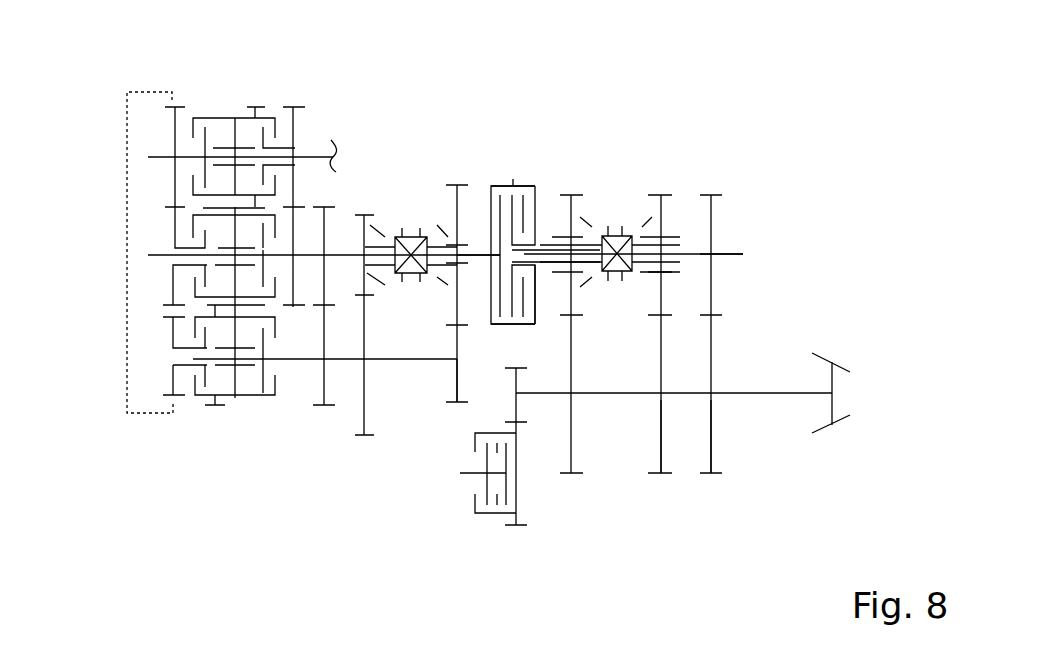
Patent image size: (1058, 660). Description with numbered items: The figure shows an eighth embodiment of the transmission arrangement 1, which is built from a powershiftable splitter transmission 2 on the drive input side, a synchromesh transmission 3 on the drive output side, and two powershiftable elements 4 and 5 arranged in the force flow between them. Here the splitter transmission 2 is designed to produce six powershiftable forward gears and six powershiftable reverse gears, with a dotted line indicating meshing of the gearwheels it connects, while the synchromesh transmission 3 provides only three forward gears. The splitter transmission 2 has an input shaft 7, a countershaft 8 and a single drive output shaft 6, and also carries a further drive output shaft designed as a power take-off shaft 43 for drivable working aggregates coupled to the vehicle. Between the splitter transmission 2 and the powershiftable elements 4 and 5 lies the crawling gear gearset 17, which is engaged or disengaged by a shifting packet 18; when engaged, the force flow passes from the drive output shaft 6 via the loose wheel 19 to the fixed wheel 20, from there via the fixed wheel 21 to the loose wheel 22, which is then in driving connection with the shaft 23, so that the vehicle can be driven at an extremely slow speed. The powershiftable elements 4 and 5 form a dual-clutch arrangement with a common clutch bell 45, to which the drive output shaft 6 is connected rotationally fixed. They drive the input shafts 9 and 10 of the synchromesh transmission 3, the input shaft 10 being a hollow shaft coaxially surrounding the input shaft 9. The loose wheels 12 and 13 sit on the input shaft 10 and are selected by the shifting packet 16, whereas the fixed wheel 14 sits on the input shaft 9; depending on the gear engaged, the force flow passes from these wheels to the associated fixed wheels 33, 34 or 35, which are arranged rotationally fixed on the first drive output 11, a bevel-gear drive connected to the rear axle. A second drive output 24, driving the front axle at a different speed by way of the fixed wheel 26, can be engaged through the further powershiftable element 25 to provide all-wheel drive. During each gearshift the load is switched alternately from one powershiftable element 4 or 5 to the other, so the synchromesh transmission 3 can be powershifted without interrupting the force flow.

The transmission arrangement 1 is at (816, 122).
The splitter transmission 2 is at (240, 415).
The synchromesh transmission 3 is at (634, 488).
The powershiftable element 4 is at (497, 333).
The powershiftable element 5 is at (533, 340).
The drive output shaft 6 is at (345, 248).
The input shaft 7 is at (148, 255).
The countershaft 8 is at (160, 157).
The input shaft 9 is at (738, 260).
The input shaft 10 is at (541, 250).
The first drive output 11 is at (778, 393).
The loose wheel 12 is at (583, 213).
The loose wheel 13 is at (666, 198).
The fixed wheel 14 is at (713, 213).
The shifting packet 16 is at (618, 217).
The crawling gear gearset 17 is at (452, 387).
The shifting packet 18 is at (411, 236).
The loose wheel 19 is at (375, 236).
The fixed wheel 20 is at (358, 423).
The fixed wheel 21 is at (387, 430).
The loose wheel 22 is at (438, 192).
The shaft 23 is at (470, 245).
The second drive output 24 is at (462, 476).
The further powershiftable element 25 is at (492, 515).
The fixed wheel 26 is at (527, 335).
The fixed wheel 33 is at (574, 430).
The fixed wheel 34 is at (712, 430).
The fixed wheel 35 is at (664, 412).
The power take-off shaft 43 is at (322, 152).
The common clutch bell 45 is at (513, 184).